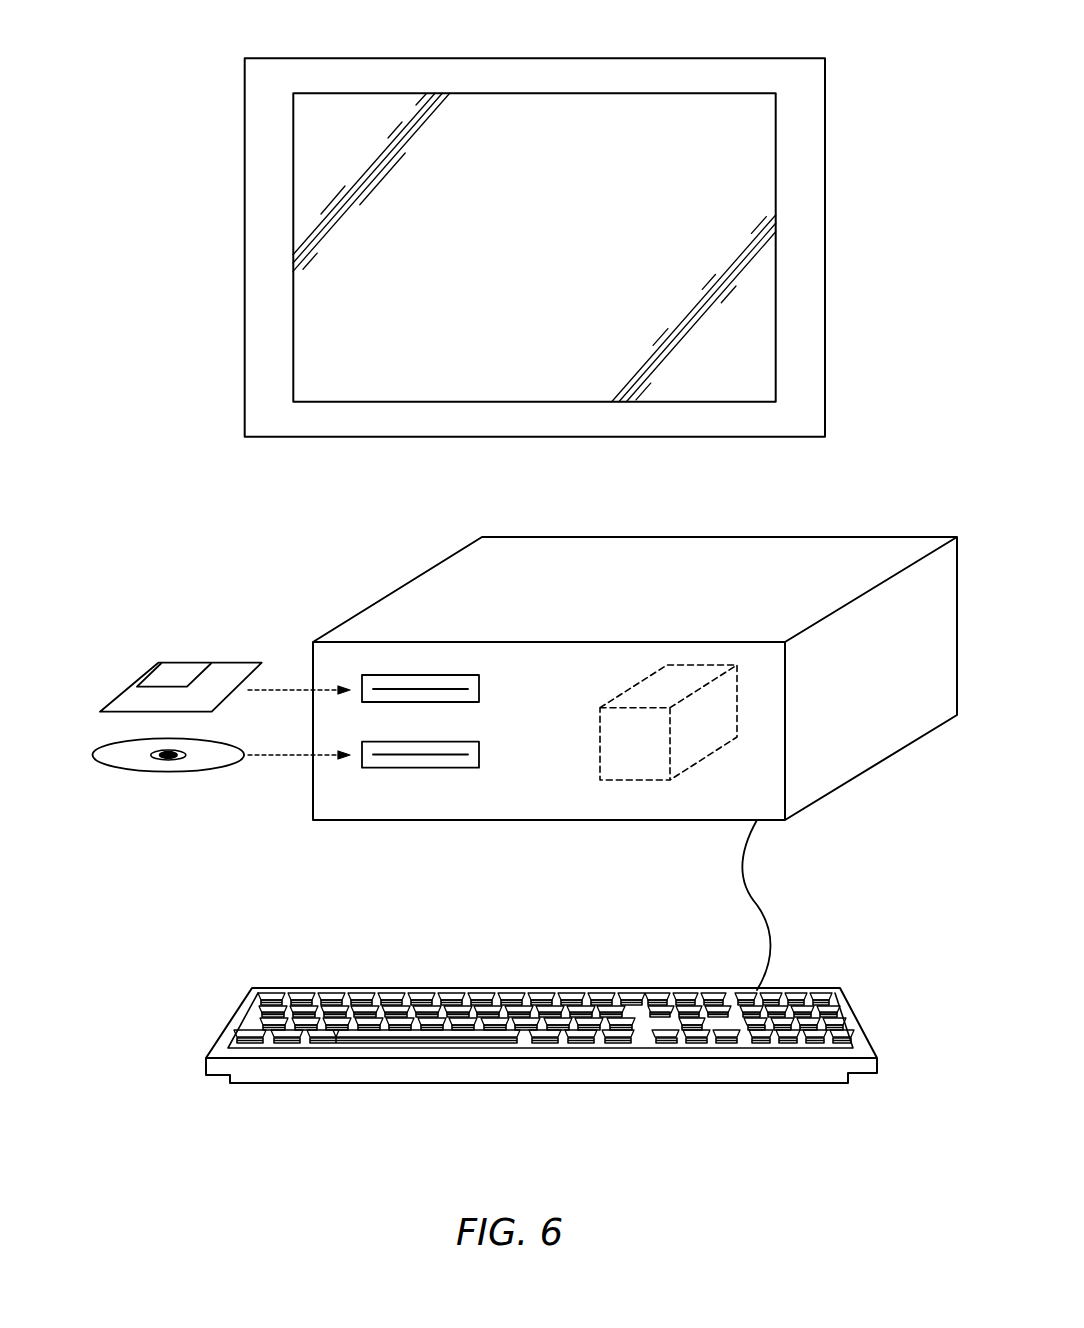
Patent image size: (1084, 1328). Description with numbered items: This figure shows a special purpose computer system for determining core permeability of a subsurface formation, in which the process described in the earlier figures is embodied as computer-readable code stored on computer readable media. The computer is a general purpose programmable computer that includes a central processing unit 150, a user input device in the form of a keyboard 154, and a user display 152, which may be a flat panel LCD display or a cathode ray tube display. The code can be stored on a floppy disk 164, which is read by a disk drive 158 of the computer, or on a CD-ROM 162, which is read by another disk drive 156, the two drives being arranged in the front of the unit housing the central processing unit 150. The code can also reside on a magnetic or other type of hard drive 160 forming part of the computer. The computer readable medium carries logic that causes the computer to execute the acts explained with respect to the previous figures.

The central processing unit 150 is at (828, 537).
The user display 152 is at (646, 58).
The keyboard 154 is at (857, 1020).
The disk drive 156 is at (479, 761).
The disk drive 158 is at (479, 690).
The hard drive 160 is at (600, 723).
The CD-ROM 162 is at (145, 771).
The floppy disk 164 is at (127, 684).